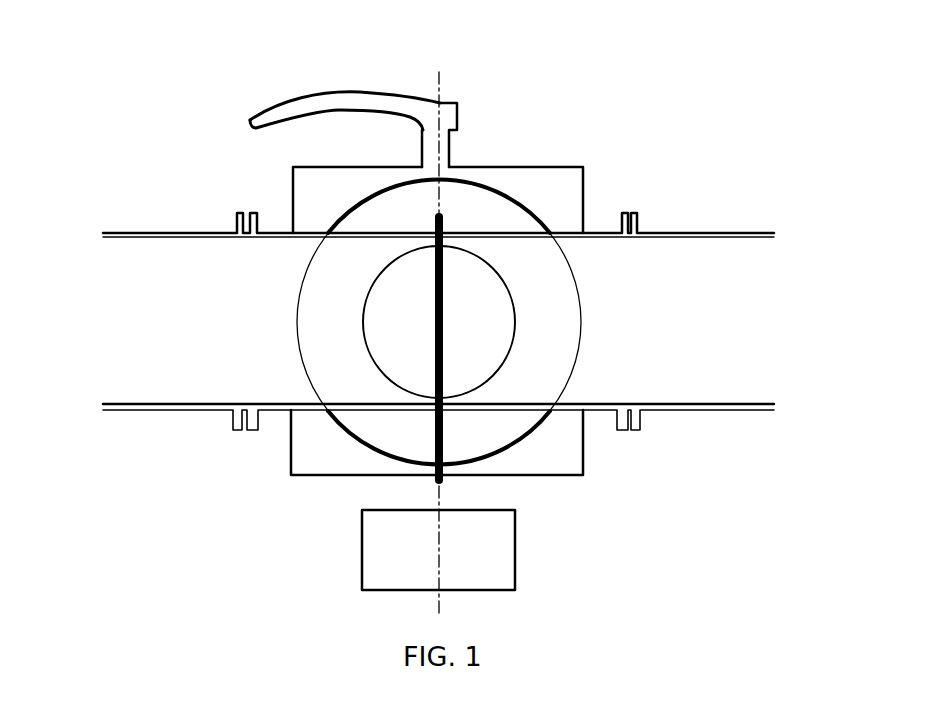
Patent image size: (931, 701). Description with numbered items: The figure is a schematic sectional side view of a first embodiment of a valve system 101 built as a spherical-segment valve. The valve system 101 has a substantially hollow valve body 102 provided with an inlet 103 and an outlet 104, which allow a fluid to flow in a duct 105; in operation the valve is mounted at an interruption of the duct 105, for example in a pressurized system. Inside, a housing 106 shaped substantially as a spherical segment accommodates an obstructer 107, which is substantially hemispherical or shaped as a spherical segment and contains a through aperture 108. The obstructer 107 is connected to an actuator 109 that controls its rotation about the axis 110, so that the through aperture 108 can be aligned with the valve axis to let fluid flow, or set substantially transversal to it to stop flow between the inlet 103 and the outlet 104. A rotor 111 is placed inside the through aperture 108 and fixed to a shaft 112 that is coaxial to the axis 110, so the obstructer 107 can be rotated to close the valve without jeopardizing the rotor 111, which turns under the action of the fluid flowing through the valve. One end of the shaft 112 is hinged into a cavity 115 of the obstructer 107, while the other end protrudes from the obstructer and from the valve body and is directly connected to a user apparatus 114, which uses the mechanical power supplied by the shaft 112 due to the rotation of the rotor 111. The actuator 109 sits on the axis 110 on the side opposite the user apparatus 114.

The valve system 101 is at (589, 75).
The valve body 102 is at (463, 364).
The inlet 103 is at (215, 213).
The outlet 104 is at (666, 418).
The duct 105 is at (438, 301).
The housing 106 is at (517, 507).
The obstructer 107 is at (468, 171).
The through aperture 108 is at (495, 297).
The actuator 109 is at (381, 132).
The axis 110 is at (442, 81).
The rotor 111 is at (336, 384).
The shaft 112 is at (339, 384).
The user apparatus 114 is at (375, 553).
The cavity 115 is at (307, 115).